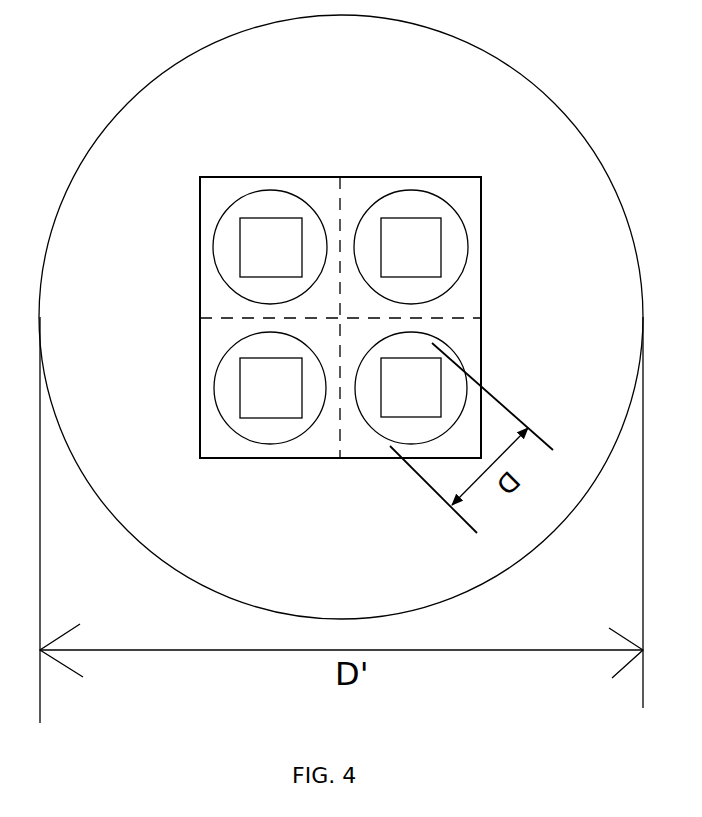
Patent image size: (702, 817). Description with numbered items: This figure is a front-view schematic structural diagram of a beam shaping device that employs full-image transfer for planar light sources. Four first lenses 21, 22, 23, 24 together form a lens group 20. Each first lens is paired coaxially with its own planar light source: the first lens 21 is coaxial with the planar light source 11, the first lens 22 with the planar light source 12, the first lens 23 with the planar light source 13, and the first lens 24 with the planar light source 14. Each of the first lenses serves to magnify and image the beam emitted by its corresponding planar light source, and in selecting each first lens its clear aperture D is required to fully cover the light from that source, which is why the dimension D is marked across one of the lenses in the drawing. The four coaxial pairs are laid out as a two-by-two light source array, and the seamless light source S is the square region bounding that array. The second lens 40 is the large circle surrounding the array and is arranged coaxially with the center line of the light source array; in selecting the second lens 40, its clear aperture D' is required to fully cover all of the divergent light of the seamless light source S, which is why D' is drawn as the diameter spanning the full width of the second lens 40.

The planar light source 11 is at (282, 232).
The planar light source 12 is at (266, 400).
The planar light source 13 is at (401, 230).
The planar light source 14 is at (403, 400).
The lens group 20 is at (230, 287).
The first lens 21 is at (238, 212).
The first lens 22 is at (227, 386).
The first lens 23 is at (458, 248).
The first lens 24 is at (434, 348).
The second lens 40 is at (589, 193).
The seamless light source S is at (462, 174).